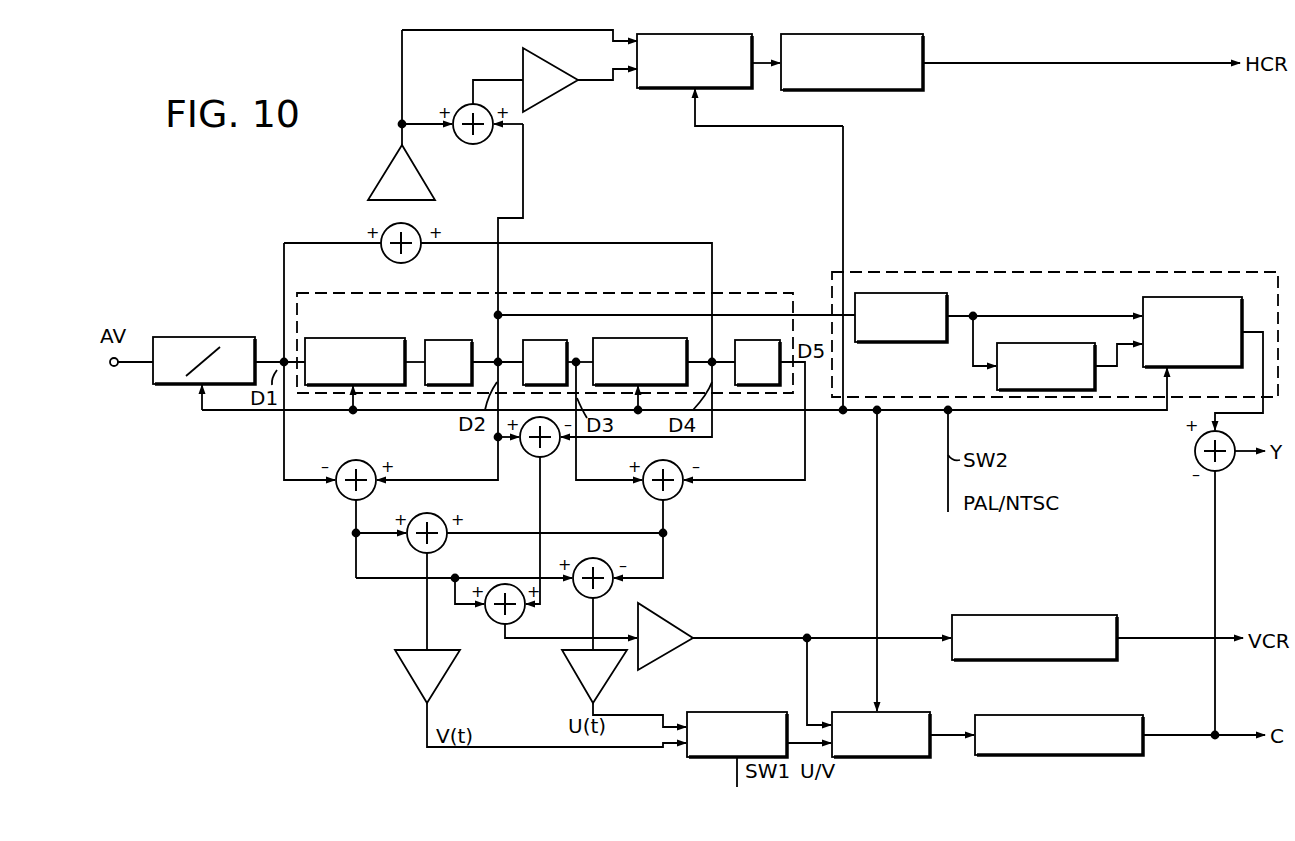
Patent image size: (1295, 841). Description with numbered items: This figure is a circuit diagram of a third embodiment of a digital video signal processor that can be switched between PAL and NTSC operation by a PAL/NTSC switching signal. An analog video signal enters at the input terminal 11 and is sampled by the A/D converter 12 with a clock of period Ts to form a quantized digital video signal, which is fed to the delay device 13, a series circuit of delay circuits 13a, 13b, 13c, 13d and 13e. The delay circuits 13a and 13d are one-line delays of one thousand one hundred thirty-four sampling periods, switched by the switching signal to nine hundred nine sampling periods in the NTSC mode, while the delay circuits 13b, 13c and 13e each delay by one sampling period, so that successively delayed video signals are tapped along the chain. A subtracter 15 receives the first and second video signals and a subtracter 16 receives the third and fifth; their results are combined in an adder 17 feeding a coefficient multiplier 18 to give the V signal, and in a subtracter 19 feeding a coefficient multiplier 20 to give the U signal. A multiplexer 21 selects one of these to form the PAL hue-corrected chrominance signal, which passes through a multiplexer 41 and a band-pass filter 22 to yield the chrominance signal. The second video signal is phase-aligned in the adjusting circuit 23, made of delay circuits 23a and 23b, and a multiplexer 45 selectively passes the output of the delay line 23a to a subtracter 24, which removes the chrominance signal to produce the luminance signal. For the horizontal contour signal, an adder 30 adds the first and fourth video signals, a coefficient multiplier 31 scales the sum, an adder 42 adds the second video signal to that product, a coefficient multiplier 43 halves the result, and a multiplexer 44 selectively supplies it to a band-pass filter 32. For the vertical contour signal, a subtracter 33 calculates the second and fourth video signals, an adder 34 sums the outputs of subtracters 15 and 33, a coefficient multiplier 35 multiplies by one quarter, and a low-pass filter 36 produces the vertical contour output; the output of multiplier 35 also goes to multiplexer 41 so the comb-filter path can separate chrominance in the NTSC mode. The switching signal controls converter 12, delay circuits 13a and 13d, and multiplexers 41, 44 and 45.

The input terminal 11 is at (114, 367).
The A/D converter 12 is at (217, 323).
The delay device 13 is at (582, 273).
The delay circuit 13a is at (331, 338).
The delay circuit 13b is at (436, 324).
The delay circuit 13c is at (528, 340).
The delay circuit 13d is at (627, 321).
The delay circuit 13e is at (740, 340).
The subtracter 15 is at (343, 494).
The subtracter 16 is at (650, 494).
The adder 17 is at (414, 547).
The coefficient multiplier 18 is at (410, 687).
The subtracter 19 is at (580, 592).
The coefficient multiplier 20 is at (576, 678).
The multiplexer 21 is at (735, 712).
The band-pass filter 22 is at (1020, 755).
The adjusting circuit 23 is at (1000, 272).
The delay circuit 23a is at (928, 293).
The delay circuit 23b is at (1021, 328).
The subtracter 24 is at (1230, 466).
The adder 30 is at (414, 258).
The coefficient multiplier 31 is at (425, 158).
The band-pass filter 32 is at (874, 90).
The subtracter 33 is at (530, 454).
The adder 34 is at (492, 619).
The coefficient multiplier 35 is at (683, 603).
The low-pass filter 36 is at (1003, 615).
The multiplexer 41 is at (899, 757).
The adder 42 is at (460, 142).
The coefficient multiplier 43 is at (558, 100).
The multiplexer 44 is at (655, 88).
The multiplexer 45 is at (1243, 281).